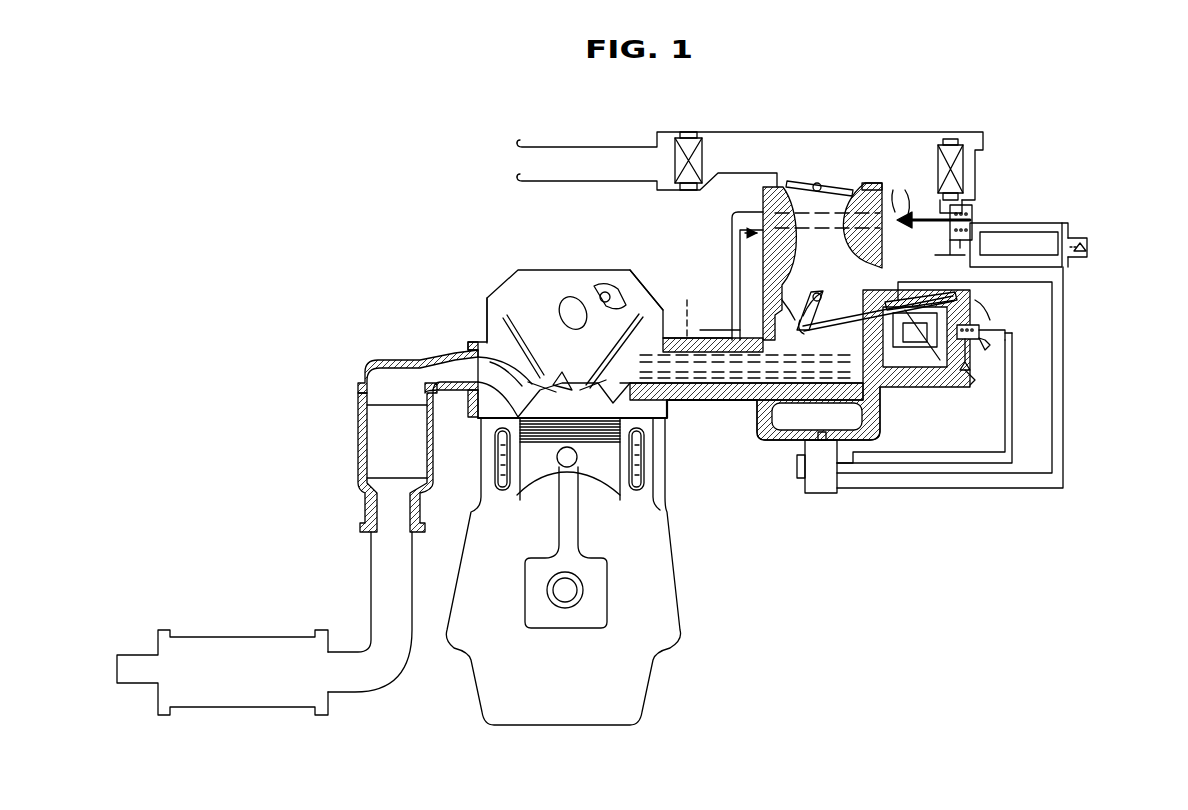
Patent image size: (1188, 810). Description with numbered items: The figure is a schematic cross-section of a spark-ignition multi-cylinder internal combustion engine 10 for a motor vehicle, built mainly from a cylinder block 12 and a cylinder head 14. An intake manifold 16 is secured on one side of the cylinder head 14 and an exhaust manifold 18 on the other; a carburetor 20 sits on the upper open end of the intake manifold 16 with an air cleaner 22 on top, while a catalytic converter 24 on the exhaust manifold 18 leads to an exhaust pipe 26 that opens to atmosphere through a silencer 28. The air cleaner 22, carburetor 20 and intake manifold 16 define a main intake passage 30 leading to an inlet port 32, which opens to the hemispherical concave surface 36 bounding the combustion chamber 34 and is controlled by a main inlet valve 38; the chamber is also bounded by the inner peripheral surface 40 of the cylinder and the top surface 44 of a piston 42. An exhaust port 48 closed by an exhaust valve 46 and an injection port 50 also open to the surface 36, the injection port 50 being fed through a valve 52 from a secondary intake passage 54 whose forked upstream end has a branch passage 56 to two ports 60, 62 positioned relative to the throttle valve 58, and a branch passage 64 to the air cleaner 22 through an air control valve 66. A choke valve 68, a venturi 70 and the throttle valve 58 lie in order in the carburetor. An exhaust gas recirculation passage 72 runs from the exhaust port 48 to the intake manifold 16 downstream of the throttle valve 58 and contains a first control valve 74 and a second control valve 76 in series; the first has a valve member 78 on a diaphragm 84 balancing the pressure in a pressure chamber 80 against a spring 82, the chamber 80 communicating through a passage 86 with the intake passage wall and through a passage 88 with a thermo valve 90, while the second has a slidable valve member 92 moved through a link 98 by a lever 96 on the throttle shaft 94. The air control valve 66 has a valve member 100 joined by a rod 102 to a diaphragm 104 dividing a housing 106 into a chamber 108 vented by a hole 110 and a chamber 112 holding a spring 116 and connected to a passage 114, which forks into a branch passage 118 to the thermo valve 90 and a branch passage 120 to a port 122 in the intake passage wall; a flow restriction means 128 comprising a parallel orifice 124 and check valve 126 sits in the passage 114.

The internal combustion engine 10 is at (488, 283).
The cylinder block 12 is at (660, 497).
The cylinder head 14 is at (482, 306).
The intake manifold 16 is at (748, 410).
The exhaust manifold 18 is at (413, 358).
The carburetor 20 is at (743, 233).
The air cleaner 22 is at (828, 130).
The catalytic converter 24 is at (356, 430).
The exhaust pipe 26 is at (369, 563).
The silencer 28 is at (243, 632).
The main intake passage 30 is at (812, 370).
The inlet port 32 is at (664, 398).
The combustion chamber 34 is at (583, 414).
The hemispherical concave surface 36 is at (607, 490).
The main inlet valve 38 is at (652, 310).
The inner peripheral surface 40 is at (552, 421).
The piston 42 is at (607, 490).
The top surface 44 is at (501, 388).
The exhaust valve 46 is at (557, 324).
The exhaust port 48 is at (512, 333).
The injection port 50 is at (558, 378).
The valve 52 is at (628, 288).
The secondary intake passage 54 is at (713, 321).
The branch passage 56 is at (817, 414).
The throttle valve 58 is at (824, 282).
The port 60 is at (795, 289).
The port 62 is at (715, 326).
The branch passage 64 is at (730, 262).
The air control valve 66 is at (980, 203).
The choke valve 68 is at (830, 183).
The venturi 70 is at (845, 232).
The exhaust gas recirculation passage 72 is at (935, 383).
The first control valve 74 is at (985, 326).
The second control valve 76 is at (968, 297).
The valve member 78 is at (976, 378).
The pressure chamber 80 is at (1005, 333).
The spring 82 is at (990, 345).
The diaphragm 84 is at (1005, 350).
The passage 86 is at (995, 315).
The passage 88 is at (1013, 425).
The thermo valve 90 is at (806, 497).
The slidable valve member 92 is at (915, 365).
The throttle shaft 94 is at (822, 296).
The lever 96 is at (819, 339).
The link 98 is at (848, 330).
The valve member 100 is at (892, 190).
The rod 102 is at (908, 187).
The diaphragm 104 is at (962, 205).
The housing 106 is at (1016, 245).
The chamber 108 is at (940, 170).
The hole 110 is at (867, 225).
The chamber 112 is at (972, 222).
The passage 114 is at (1062, 221).
The spring 116 is at (1019, 237).
The branch passage 118 is at (1070, 440).
The branch passage 120 is at (1053, 281).
The port 122 is at (931, 254).
The orifice 124 is at (1070, 237).
The check valve 126 is at (1088, 254).
The flow restriction means 128 is at (1092, 243).